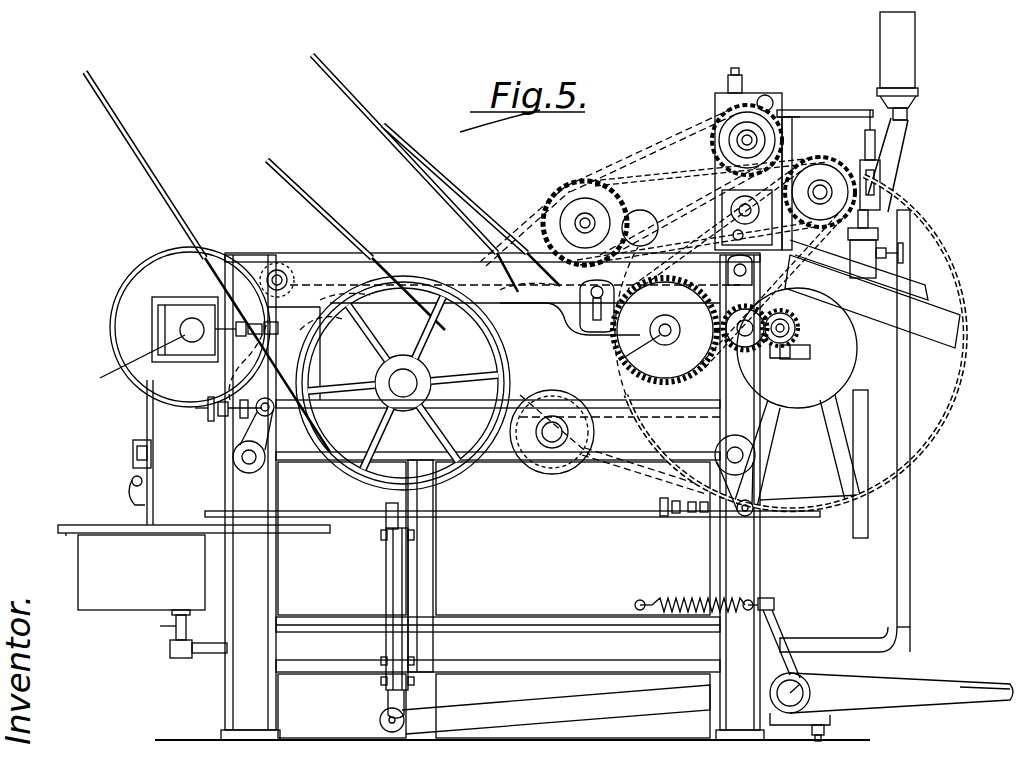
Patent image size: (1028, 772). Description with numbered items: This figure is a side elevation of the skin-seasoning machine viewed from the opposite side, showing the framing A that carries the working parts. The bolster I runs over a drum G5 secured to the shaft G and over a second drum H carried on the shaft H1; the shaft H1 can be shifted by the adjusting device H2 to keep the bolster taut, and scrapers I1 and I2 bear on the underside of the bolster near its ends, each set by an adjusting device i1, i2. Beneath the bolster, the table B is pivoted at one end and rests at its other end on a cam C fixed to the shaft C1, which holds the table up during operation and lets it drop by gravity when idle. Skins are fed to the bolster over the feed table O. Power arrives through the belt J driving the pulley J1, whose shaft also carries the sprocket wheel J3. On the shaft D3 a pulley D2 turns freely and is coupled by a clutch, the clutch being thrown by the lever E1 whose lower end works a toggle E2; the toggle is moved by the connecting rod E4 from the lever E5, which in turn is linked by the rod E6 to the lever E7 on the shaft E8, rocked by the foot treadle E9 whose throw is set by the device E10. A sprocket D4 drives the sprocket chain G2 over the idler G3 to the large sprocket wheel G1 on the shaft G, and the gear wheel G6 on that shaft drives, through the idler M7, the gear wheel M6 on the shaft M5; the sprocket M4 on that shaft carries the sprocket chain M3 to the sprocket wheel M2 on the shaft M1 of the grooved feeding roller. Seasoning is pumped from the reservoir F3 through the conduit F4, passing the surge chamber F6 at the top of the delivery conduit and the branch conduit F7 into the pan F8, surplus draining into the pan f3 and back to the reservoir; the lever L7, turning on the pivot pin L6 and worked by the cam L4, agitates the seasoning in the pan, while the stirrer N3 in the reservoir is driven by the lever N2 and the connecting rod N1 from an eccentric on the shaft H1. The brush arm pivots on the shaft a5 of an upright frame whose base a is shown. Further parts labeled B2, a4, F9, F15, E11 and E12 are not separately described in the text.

The framing A is at (492, 496).
The table B is at (478, 262).
The guide rod B2 is at (342, 258).
The bolster I is at (375, 255).
The belt J is at (435, 178).
The drum H is at (190, 327).
The shaft H1 is at (120, 402).
The adjusting device H2 is at (246, 360).
The connecting rod N1 is at (147, 415).
The lever N2 is at (133, 453).
The stirrer N3 is at (140, 512).
The adjusting device i2 is at (232, 412).
The scraper I2 is at (268, 430).
The cam C is at (290, 331).
The shaft C1 is at (335, 329).
The pulley D2 is at (455, 475).
The shaft D3 is at (403, 383).
The sprocket D4 is at (395, 420).
The idler G3 is at (560, 472).
The sprocket chain G2 is at (520, 240).
The chain sprocket a4 is at (676, 200).
The shaft a5 is at (762, 95).
The base a is at (733, 239).
The sprocket wheel J3 is at (540, 292).
The pulley J1 is at (512, 330).
The cam L4 is at (770, 95).
The lever L7 is at (826, 110).
The pivot pin L6 is at (860, 165).
The shaft M1 is at (820, 185).
The sprocket wheel M2 is at (747, 217).
The sprocket chain M3 is at (735, 268).
The sprocket M4 is at (669, 316).
The shaft M5 is at (628, 368).
The gear wheel M6 is at (618, 355).
The idler M7 is at (740, 348).
The shaft G is at (790, 330).
The drum G5 is at (797, 397).
The gear wheel G6 is at (789, 366).
The sprocket wheel G1 is at (930, 420).
The feed table O is at (945, 275).
The chamber F6 is at (897, 66).
The branch conduit F7 is at (890, 182).
The pan F8 is at (880, 230).
The pipe F9 is at (853, 515).
The drain pipe F15 is at (910, 530).
The reservoir F3 is at (194, 567).
The conduit F4 is at (208, 648).
The pan f3 is at (585, 520).
The lever E1 is at (386, 515).
The connecting rod E4 is at (386, 600).
The lever E5 is at (381, 536).
The toggle E2 is at (381, 668).
The rod E6 is at (380, 712).
The lever E7 is at (556, 709).
The adjusting device i1 is at (676, 520).
The scraper I1 is at (715, 440).
The spring E12 is at (672, 600).
The link E11 is at (778, 640).
The shaft E8 is at (800, 680).
The foot treadle E9 is at (901, 693).
The adjusting device E10 is at (830, 722).